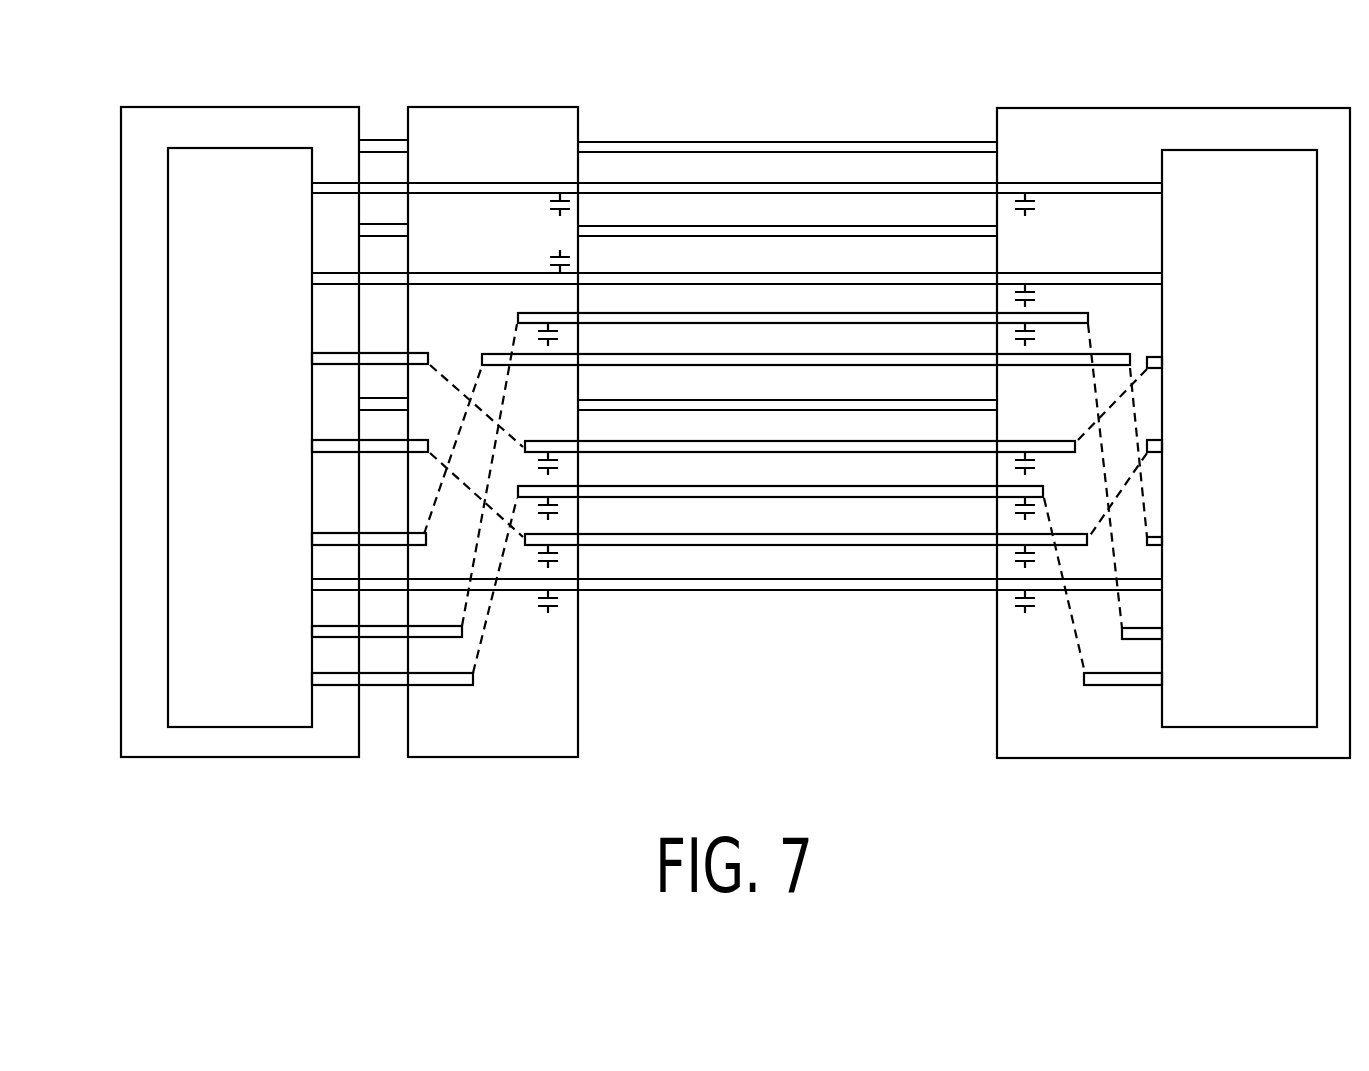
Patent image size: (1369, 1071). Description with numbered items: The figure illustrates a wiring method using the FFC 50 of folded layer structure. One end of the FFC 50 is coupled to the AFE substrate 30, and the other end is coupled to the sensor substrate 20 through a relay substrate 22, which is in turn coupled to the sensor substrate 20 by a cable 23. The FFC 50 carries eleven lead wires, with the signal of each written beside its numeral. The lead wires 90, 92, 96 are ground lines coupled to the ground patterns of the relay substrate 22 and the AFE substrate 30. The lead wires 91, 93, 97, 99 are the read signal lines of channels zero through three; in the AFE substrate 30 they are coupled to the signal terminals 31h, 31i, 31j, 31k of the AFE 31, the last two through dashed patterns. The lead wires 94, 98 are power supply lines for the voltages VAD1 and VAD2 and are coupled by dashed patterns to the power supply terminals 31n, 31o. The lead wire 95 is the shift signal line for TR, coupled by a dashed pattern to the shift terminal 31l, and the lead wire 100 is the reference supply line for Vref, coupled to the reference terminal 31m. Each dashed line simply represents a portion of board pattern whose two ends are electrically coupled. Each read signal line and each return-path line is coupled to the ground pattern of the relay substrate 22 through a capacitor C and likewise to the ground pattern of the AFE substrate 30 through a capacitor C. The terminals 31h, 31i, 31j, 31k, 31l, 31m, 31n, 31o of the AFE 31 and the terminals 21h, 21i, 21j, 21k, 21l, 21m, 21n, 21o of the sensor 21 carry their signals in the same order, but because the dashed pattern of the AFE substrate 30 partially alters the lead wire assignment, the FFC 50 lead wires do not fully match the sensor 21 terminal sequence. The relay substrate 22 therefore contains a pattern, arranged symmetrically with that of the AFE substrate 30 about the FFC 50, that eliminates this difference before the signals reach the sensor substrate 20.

The sensor substrate 20 is at (220, 106).
The sensor 21 is at (197, 150).
The relay substrate 22 is at (468, 108).
The cable 23 is at (365, 98).
The AFE substrate 30 is at (1227, 110).
The AFE 31 is at (1273, 155).
The FFC 50 is at (583, 100).
The lead wire 90 is at (770, 142).
The lead wire 91 is at (770, 183).
The lead wire 92 is at (770, 226).
The lead wire 93 is at (770, 273).
The lead wire 94 is at (770, 313).
The lead wire 95 is at (770, 354).
The lead wire 96 is at (770, 400).
The lead wire 97 is at (770, 441).
The lead wire 98 is at (770, 486).
The lead wire 99 is at (770, 534).
The lead wire 100 is at (770, 579).
The capacitor C is at (790, 403).
The terminal 21h is at (313, 190).
The terminal 21i is at (316, 281).
The terminal 21j is at (326, 361).
The terminal 21k is at (323, 449).
The terminal 21l is at (332, 542).
The terminal 21m is at (310, 587).
The terminal 21n is at (334, 634).
The terminal 21o is at (340, 682).
The signal terminal 31h is at (1183, 190).
The signal terminal 31i is at (1180, 281).
The signal terminal 31j is at (1203, 365).
The signal terminal 31k is at (1206, 449).
The shift terminal 31l is at (1196, 542).
The reference terminal 31m is at (1186, 587).
The power supply terminal 31n is at (1200, 636).
The power supply terminal 31o is at (1180, 682).